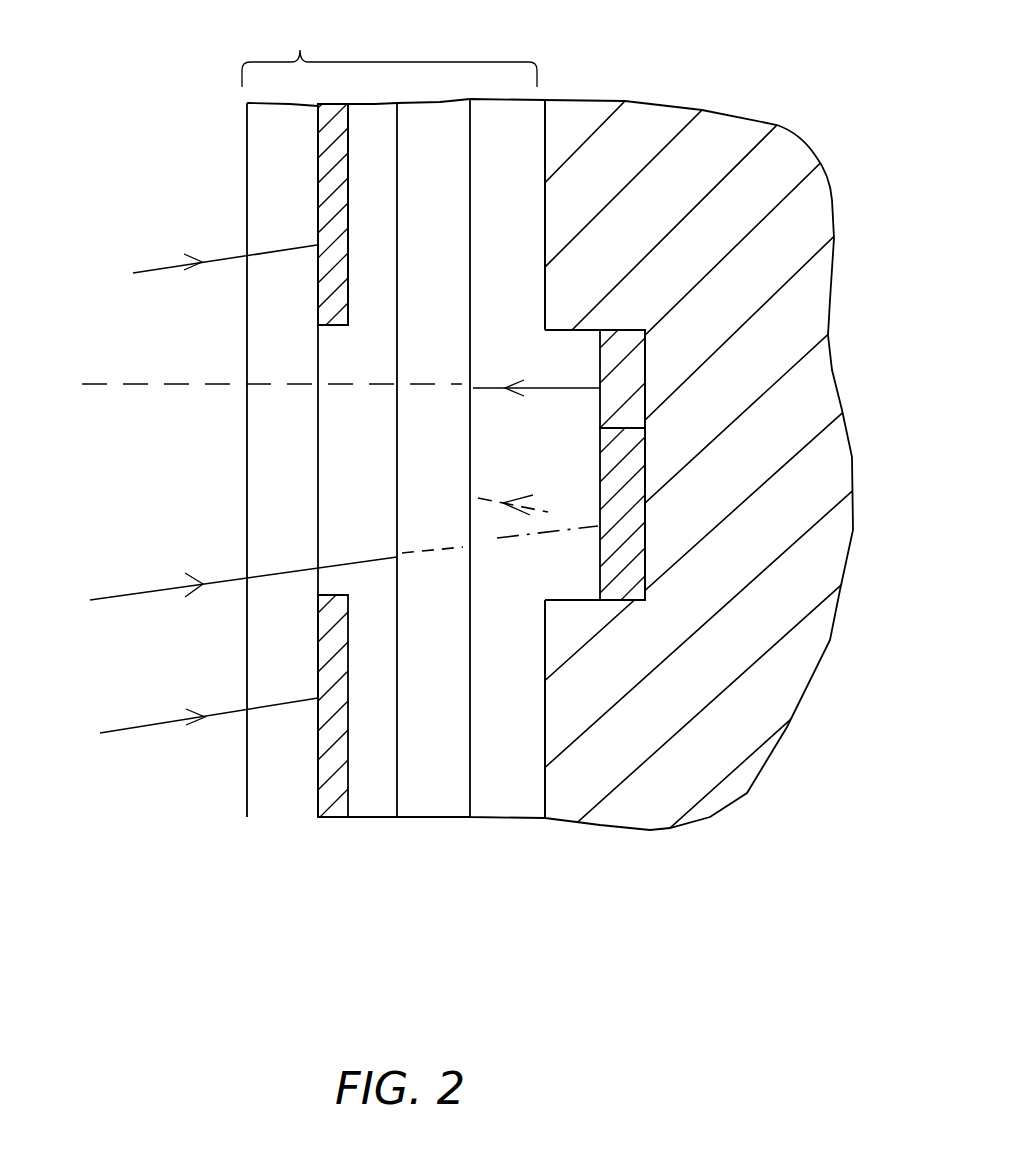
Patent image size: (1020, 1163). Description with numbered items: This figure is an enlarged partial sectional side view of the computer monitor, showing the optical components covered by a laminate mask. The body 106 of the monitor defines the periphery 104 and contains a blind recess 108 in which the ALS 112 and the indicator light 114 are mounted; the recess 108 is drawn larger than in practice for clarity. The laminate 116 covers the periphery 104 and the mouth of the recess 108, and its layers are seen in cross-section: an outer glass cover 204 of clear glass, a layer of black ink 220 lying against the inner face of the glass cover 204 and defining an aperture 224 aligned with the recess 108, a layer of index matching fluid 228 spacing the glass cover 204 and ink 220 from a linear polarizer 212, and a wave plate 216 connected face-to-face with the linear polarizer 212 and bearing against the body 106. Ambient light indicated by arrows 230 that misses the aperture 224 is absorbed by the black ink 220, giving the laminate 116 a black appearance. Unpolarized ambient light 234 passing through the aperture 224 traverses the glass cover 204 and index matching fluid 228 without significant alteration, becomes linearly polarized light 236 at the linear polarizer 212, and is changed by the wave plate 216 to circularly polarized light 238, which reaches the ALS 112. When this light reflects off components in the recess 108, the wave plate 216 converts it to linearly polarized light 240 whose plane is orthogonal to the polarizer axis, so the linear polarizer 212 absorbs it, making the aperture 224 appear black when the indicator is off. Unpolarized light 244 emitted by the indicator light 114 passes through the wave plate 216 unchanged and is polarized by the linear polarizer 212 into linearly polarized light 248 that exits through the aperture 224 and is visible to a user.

The periphery 104 is at (541, 158).
The body 106 is at (703, 145).
The recess 108 is at (572, 598).
The ALS 112 is at (630, 520).
The indicator light 114 is at (620, 372).
The laminate assembly 116 is at (389, 51).
The glass cover 204 is at (255, 755).
The linear polarizer 212 is at (433, 797).
The wave plate 216 is at (518, 797).
The layer of black ink 220 is at (323, 770).
The aperture 224 is at (333, 320).
The index matching fluid 228 is at (363, 797).
The arrows 230 is at (148, 268).
The unpolarized ambient light 234 is at (157, 590).
The linearly polarized light 236 is at (455, 545).
The circularly polarized light 238 is at (483, 540).
The linearly polarized light 240 is at (478, 497).
The unpolarized light 244 is at (525, 385).
The linearly polarized light 248 is at (450, 383).